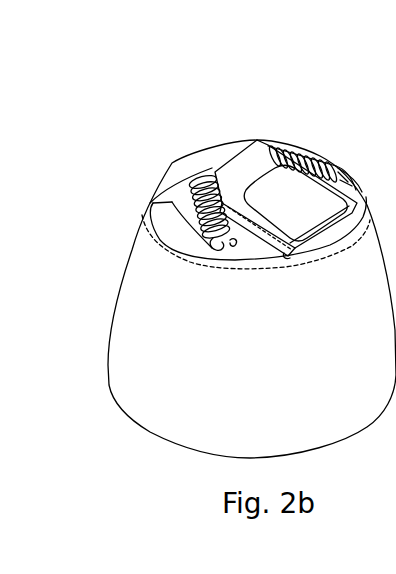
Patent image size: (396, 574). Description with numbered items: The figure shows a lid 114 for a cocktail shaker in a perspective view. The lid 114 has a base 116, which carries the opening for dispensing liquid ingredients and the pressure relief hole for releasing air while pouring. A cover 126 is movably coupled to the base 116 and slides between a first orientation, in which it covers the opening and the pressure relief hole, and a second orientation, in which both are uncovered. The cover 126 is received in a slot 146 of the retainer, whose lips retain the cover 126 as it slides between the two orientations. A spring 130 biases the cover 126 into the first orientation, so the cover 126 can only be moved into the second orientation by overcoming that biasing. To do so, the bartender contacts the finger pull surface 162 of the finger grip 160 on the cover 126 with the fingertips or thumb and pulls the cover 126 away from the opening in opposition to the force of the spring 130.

The lid 114 is at (343, 79).
The base 116 is at (157, 162).
The cover 126 is at (255, 138).
The spring 130 is at (183, 187).
The slot 146 is at (330, 245).
The finger grip 160 is at (247, 170).
The finger pull surface 162 is at (264, 174).